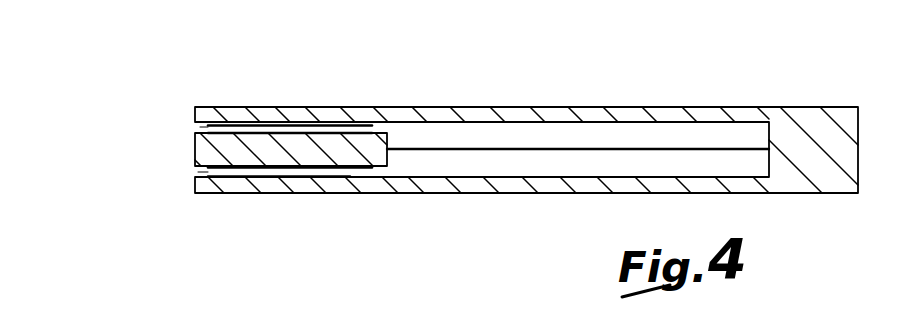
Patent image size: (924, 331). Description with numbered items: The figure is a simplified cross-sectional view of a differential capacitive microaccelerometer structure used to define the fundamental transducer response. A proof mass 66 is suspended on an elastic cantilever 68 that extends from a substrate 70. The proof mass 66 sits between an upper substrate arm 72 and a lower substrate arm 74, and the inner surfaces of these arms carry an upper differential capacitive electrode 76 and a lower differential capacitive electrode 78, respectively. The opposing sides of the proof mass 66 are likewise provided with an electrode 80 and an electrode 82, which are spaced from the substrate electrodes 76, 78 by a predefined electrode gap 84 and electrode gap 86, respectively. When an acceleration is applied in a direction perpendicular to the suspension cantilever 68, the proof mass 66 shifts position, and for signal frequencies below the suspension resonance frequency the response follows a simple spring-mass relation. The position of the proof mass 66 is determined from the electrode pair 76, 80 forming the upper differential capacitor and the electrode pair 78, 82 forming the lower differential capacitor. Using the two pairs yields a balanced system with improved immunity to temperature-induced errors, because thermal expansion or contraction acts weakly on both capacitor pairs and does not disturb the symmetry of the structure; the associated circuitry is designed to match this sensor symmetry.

The proof mass 66 is at (295, 147).
The elastic cantilever 68 is at (662, 149).
The substrate 70 is at (828, 120).
The substrate arm 72 is at (245, 108).
The substrate arm 74 is at (318, 180).
The upper differential capacitive electrode 76 is at (222, 125).
The lower differential capacitive electrode 78 is at (240, 176).
The electrode 80 is at (340, 133).
The electrode 82 is at (350, 176).
The electrode gap 84 is at (205, 127).
The electrode gap 86 is at (198, 172).